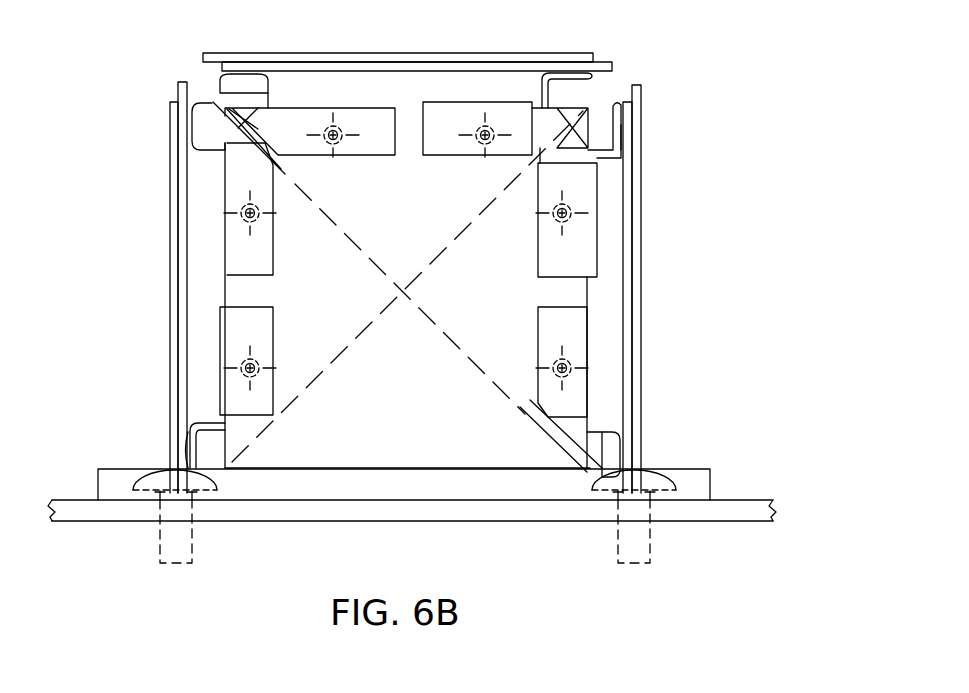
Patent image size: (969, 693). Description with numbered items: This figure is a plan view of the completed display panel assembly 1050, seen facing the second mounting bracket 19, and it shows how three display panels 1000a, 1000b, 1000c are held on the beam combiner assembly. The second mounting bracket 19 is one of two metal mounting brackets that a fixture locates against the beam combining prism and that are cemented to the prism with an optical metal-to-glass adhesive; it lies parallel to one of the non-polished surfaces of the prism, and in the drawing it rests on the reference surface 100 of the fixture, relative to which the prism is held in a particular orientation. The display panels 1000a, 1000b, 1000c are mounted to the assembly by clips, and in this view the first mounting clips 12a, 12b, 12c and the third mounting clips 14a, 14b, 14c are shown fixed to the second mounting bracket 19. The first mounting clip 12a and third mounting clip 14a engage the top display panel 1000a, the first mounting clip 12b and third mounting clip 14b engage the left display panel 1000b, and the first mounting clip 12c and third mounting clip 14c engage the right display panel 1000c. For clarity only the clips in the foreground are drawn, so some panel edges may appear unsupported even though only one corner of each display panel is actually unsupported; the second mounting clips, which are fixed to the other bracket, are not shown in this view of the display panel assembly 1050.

The display panel 1000a is at (368, 53).
The display panel 1000b is at (170, 243).
The display panel 1000c is at (641, 326).
The first mounting clip 12a is at (222, 82).
The first mounting clip 12b is at (200, 131).
The first mounting clip 12c is at (612, 453).
The third mounting clip 14a is at (580, 80).
The third mounting clip 14b is at (203, 425).
The third mounting clip 14c is at (603, 158).
The display panel assembly 1050 is at (705, 101).
The second mounting bracket 19 is at (440, 486).
The reference surface 100 is at (738, 512).